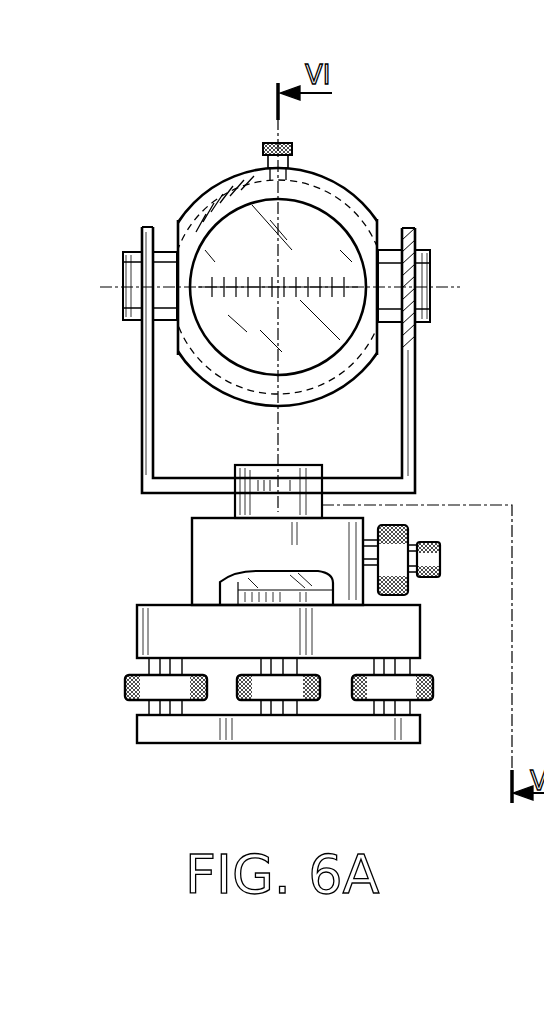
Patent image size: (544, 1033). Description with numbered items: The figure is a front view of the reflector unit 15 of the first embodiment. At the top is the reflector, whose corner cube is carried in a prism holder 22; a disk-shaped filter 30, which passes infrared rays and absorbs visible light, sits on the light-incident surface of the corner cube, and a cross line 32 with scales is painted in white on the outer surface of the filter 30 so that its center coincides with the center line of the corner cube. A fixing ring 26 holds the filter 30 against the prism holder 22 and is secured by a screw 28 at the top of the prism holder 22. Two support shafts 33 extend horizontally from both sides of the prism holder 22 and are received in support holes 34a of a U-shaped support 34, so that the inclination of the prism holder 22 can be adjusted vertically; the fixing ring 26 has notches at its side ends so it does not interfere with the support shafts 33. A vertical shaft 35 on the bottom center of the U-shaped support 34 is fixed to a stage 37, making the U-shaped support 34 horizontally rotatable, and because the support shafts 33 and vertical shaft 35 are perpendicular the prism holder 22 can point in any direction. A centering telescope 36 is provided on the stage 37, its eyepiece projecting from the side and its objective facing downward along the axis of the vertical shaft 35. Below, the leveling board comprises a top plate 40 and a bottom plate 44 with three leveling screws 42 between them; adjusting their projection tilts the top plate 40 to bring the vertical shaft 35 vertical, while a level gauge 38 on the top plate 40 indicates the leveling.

The reflector unit 15 is at (168, 184).
The prism holder 22 is at (390, 262).
The fixing ring 26 is at (363, 198).
The screw 28 is at (266, 143).
The filter 30 is at (247, 220).
The cross line 32 is at (300, 266).
The support shafts 33 is at (134, 277).
The U-shaped support 34 is at (141, 388).
The support holes 34a is at (415, 301).
The vertical shaft 35 is at (248, 507).
The centering telescope 36 is at (438, 557).
The stage 37 is at (200, 532).
The level gauge 38 is at (230, 588).
The top plate 40 is at (413, 637).
The leveling screws 42 is at (125, 687).
The bottom plate 44 is at (352, 727).